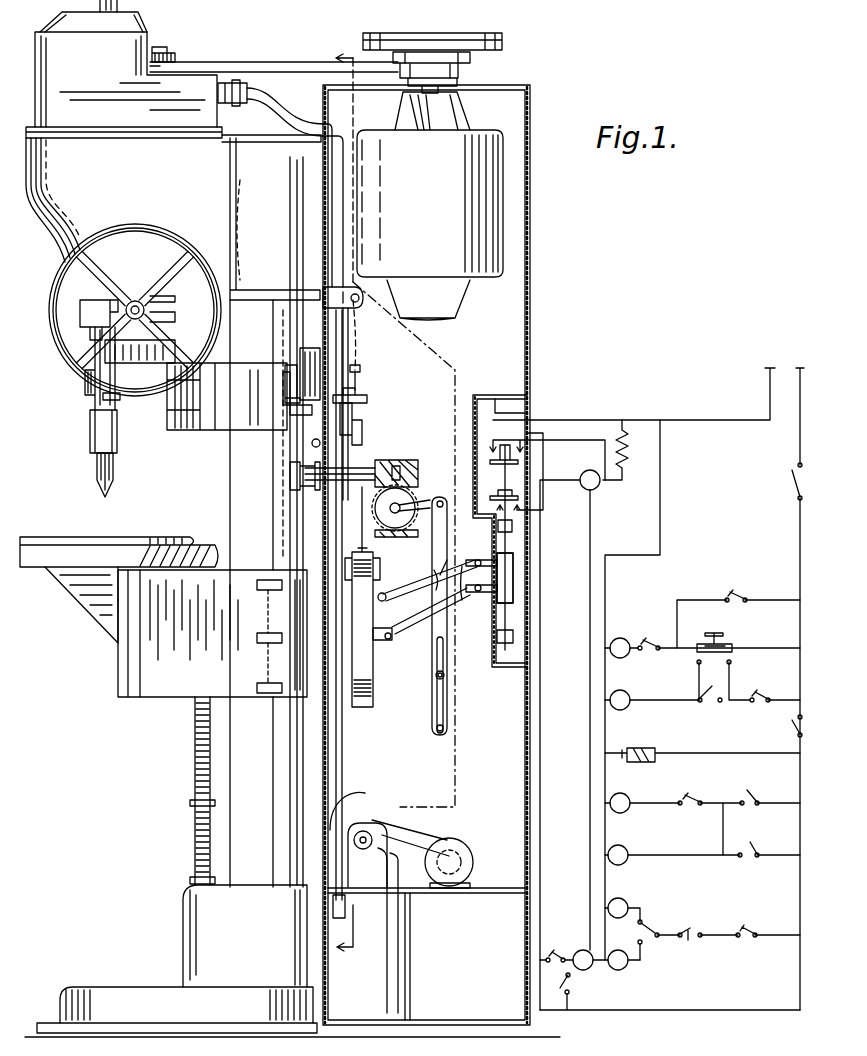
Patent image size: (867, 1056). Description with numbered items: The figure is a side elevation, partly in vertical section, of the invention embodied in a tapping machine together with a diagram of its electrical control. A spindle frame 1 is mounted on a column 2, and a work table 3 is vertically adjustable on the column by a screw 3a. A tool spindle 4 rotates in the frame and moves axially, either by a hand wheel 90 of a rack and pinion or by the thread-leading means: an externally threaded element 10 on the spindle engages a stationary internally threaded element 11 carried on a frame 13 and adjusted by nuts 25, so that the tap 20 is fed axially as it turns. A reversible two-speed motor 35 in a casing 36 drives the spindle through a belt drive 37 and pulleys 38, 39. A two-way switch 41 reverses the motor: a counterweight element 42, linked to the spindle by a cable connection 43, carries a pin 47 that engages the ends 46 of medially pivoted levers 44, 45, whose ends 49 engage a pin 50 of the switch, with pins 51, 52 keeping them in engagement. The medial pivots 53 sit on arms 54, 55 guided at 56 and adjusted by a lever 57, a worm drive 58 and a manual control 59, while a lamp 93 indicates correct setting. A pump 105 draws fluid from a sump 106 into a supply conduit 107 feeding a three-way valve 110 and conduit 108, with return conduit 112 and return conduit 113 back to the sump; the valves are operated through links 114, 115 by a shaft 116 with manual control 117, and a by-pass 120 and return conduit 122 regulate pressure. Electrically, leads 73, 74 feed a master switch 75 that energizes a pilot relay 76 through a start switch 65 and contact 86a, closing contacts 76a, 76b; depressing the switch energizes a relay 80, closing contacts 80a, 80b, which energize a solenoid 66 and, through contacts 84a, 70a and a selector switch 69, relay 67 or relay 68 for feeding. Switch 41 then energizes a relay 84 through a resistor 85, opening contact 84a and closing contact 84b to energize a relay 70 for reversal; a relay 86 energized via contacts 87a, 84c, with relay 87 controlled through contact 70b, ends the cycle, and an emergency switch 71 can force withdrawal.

The spindle frame 1 is at (63, 232).
The column 2 is at (246, 440).
The work table 3 is at (82, 558).
The screw 3a is at (197, 778).
The tool spindle 4 is at (87, 327).
The externally threaded element 10 is at (79, 409).
The stationary element 11 is at (112, 430).
The frame 13 is at (205, 413).
The tapping tool 20 is at (95, 466).
The nuts 25 is at (122, 399).
The electric motor 35 is at (480, 200).
The casing 36 is at (530, 263).
The belt drive 37 is at (278, 66).
The pulley 38 is at (393, 34).
The pulley 39 is at (163, 54).
The two-way electrical switch 41 is at (490, 470).
The element 42 is at (363, 707).
The cable connection 43 is at (362, 356).
The lever 44 is at (400, 590).
The lever 45 is at (417, 625).
The lever ends 46 is at (386, 603).
The pin 47 is at (378, 640).
The lever ends 49 is at (469, 550).
The pin 50 is at (487, 582).
The pin 51 is at (481, 554).
The pin 52 is at (481, 600).
The medial pivots 53 is at (439, 569).
The arm 54 is at (446, 518).
The arm 55 is at (432, 725).
The guide 56 is at (448, 692).
The lever 57 is at (410, 537).
The worm drive 58 is at (401, 460).
The manual control 59 is at (298, 484).
The switch 65 is at (722, 645).
The solenoid 66 is at (641, 747).
The relay 67 is at (620, 970).
The relay 68 is at (628, 900).
The selector switch 69 is at (650, 943).
The relay 70 is at (586, 970).
The contact 70a is at (688, 928).
The contact 70b is at (748, 793).
The emergency switch 71 is at (553, 952).
The lead 73 is at (798, 372).
The lead 74 is at (766, 372).
The master switch 75 is at (790, 486).
The pilot relay 76 is at (620, 638).
The contact 76a is at (742, 596).
The contact 76b is at (766, 690).
The relay 80 is at (628, 693).
The contact 80a is at (723, 681).
The contact 80b is at (795, 728).
The relay 84 is at (590, 490).
The contact 84a is at (744, 926).
The contact 84b is at (555, 990).
The contact 84c is at (695, 798).
The resistor 85 is at (627, 445).
The relay 86 is at (627, 795).
The contact 86a is at (652, 636).
The relay 87 is at (626, 847).
The contact 87a is at (747, 844).
The hand wheel 90 is at (156, 232).
The electric lamp 93 is at (312, 446).
The pump 105 is at (398, 815).
The sump 106 is at (366, 955).
The conduit 107 is at (345, 793).
The conduit 108 is at (345, 256).
The three-way valve 110 is at (362, 396).
The return conduit 112 is at (345, 752).
The return conduit 113 is at (345, 905).
The link connection 114 is at (358, 350).
The link connection 115 is at (352, 386).
The shaft 116 is at (302, 352).
The manual control 117 is at (287, 400).
The by-pass 120 is at (363, 432).
The return conduit 122 is at (320, 366).